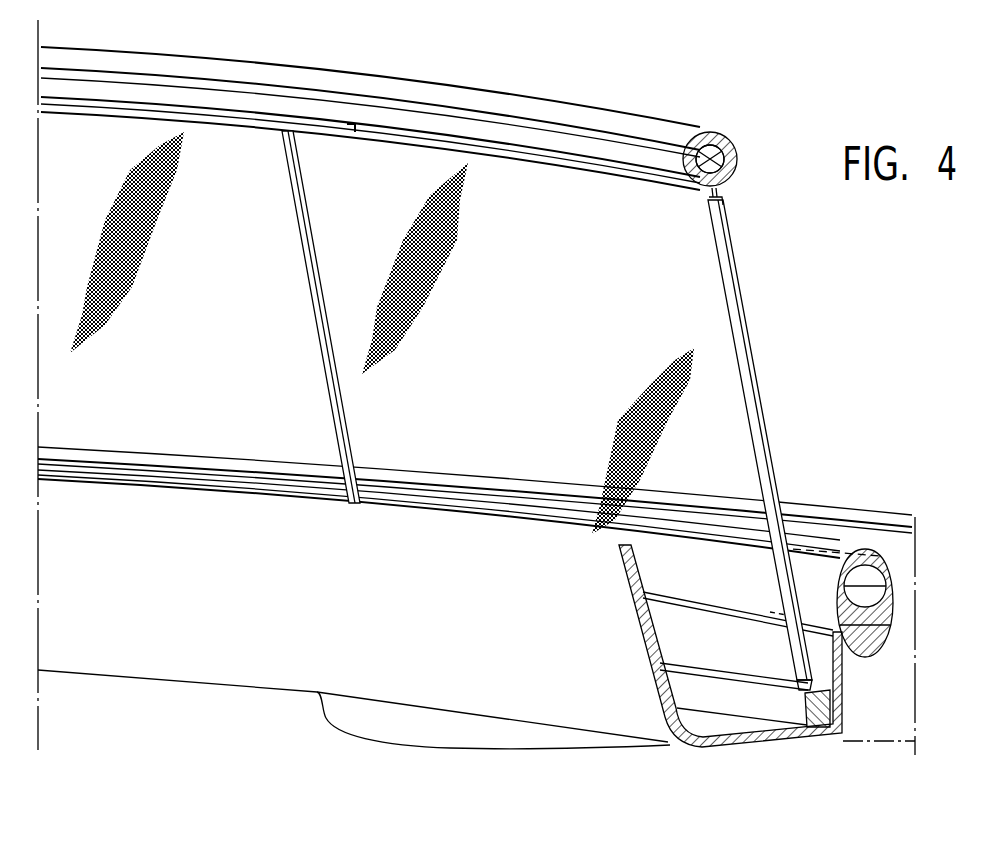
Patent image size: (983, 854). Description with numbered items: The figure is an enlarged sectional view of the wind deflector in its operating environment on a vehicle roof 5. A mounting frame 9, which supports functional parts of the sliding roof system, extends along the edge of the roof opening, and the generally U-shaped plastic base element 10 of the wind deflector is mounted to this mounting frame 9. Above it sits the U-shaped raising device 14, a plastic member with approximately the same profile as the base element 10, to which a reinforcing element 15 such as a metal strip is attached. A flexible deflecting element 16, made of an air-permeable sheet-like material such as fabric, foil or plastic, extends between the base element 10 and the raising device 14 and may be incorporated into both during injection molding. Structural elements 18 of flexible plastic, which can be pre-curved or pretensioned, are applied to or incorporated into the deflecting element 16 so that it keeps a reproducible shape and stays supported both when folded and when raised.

The vehicle roof 5 is at (898, 540).
The mounting frame 9 is at (737, 748).
The base element 10 is at (820, 733).
The raising device 14 is at (722, 133).
The reinforcing element 15 is at (735, 157).
The deflecting element 16 is at (697, 256).
The structural elements 18 is at (548, 354).